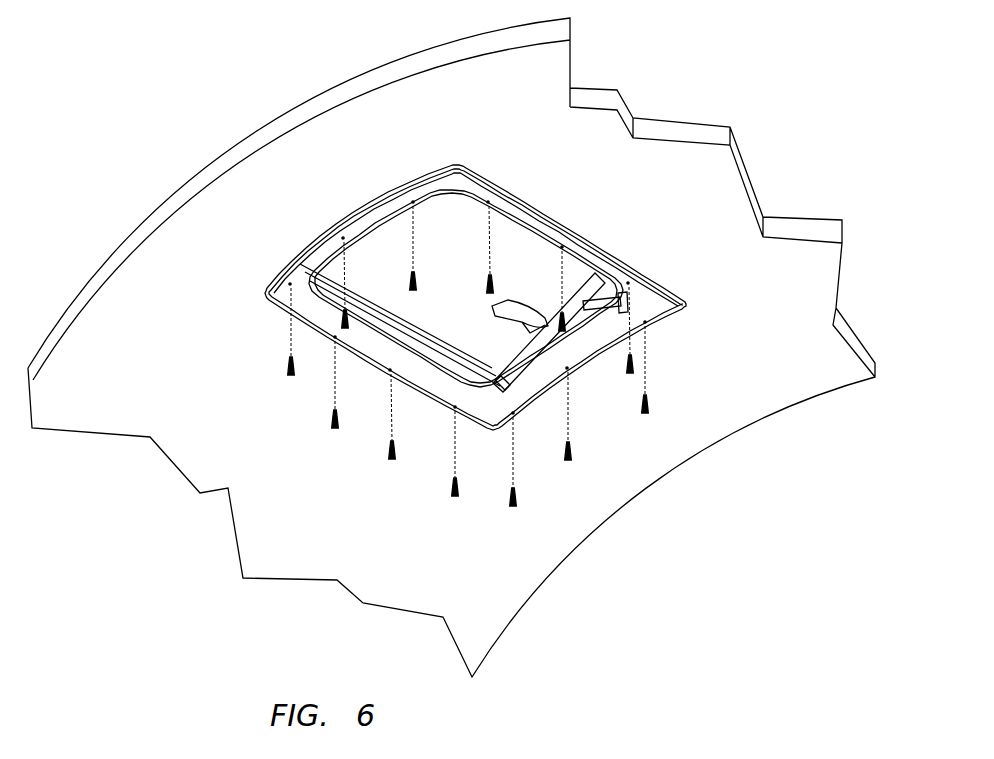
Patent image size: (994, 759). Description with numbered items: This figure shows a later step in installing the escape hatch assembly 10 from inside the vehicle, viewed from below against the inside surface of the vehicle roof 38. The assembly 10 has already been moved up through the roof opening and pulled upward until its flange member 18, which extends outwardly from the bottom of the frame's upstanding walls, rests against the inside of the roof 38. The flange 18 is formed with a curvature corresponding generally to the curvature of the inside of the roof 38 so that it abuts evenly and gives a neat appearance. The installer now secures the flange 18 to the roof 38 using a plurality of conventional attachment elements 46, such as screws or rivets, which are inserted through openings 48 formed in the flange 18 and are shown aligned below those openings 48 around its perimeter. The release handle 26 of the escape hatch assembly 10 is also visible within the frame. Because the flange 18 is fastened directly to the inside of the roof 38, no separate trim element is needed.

The escape hatch assembly 10 is at (553, 308).
The flange member 18 is at (665, 310).
The release handle 26 is at (333, 416).
The vehicle roof 38 is at (720, 190).
The attachment elements 46 is at (647, 405).
The openings 48 is at (290, 283).